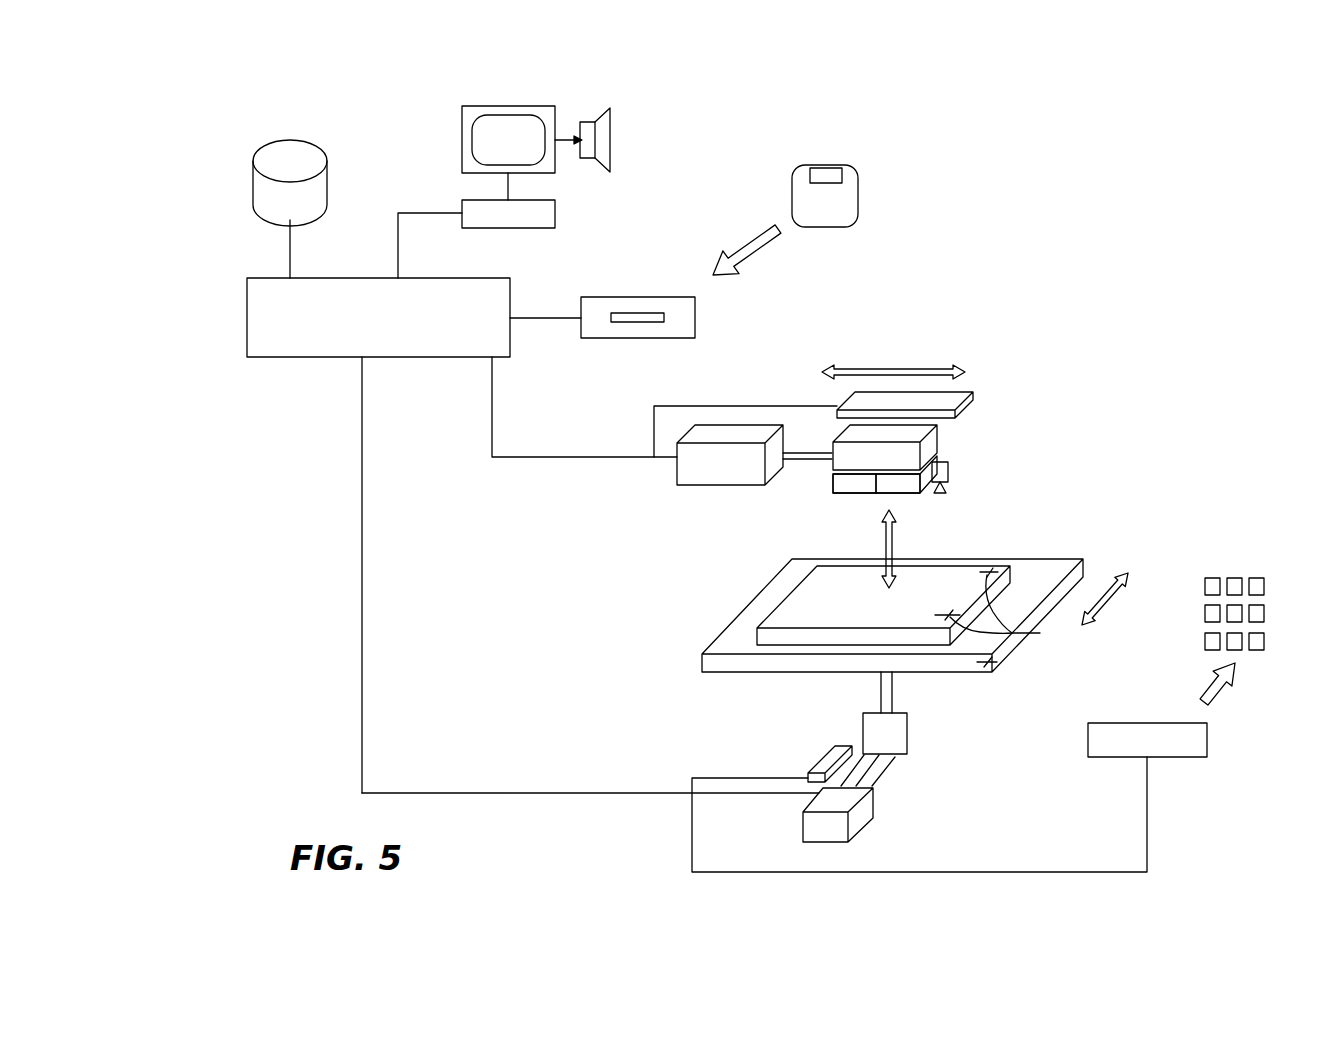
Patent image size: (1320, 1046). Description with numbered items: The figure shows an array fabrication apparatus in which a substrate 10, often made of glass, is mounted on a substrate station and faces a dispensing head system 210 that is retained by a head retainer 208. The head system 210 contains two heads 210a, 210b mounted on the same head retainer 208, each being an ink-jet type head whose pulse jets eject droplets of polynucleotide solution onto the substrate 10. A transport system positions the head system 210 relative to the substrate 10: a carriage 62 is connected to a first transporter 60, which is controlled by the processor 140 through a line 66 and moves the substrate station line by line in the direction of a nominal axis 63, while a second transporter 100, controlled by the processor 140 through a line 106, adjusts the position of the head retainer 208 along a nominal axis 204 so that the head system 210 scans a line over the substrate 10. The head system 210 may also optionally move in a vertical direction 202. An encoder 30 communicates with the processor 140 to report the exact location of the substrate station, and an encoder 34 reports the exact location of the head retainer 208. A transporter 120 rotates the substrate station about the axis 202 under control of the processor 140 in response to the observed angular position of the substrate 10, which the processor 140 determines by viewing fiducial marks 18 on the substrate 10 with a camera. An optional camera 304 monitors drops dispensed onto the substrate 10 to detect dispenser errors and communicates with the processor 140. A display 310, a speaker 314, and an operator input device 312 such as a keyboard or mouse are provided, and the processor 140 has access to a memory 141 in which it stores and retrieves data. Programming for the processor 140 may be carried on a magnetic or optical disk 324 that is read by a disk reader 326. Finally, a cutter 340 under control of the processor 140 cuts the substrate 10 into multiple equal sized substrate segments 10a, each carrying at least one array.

The memory 141 is at (258, 211).
The processor 140 is at (380, 324).
The display 310 is at (462, 138).
The operator input device 312 is at (555, 214).
The speaker 314 is at (612, 132).
The disk reader 326 is at (673, 298).
The magnetic or optical disk 324 is at (838, 165).
The nominal axis 204 is at (891, 367).
The encoder 34 is at (974, 401).
The head retainer 208 is at (934, 443).
The camera 304 is at (949, 473).
The line 106 is at (585, 456).
The second transporter 100 is at (677, 473).
The dispensing head system 210 is at (832, 482).
The head 210a is at (850, 483).
The head 210b is at (900, 485).
The substrate 10 is at (830, 575).
The vertical direction 202 is at (896, 538).
The line 66 is at (362, 500).
The fiducial marks 18 is at (1004, 617).
The nominal axis 63 is at (1108, 598).
The substrate segments 10a is at (1255, 578).
The encoder 30 is at (833, 752).
The transporter 120 is at (907, 737).
The carriage 62 is at (887, 776).
The first transporter 60 is at (850, 835).
The cutter 340 is at (1182, 757).